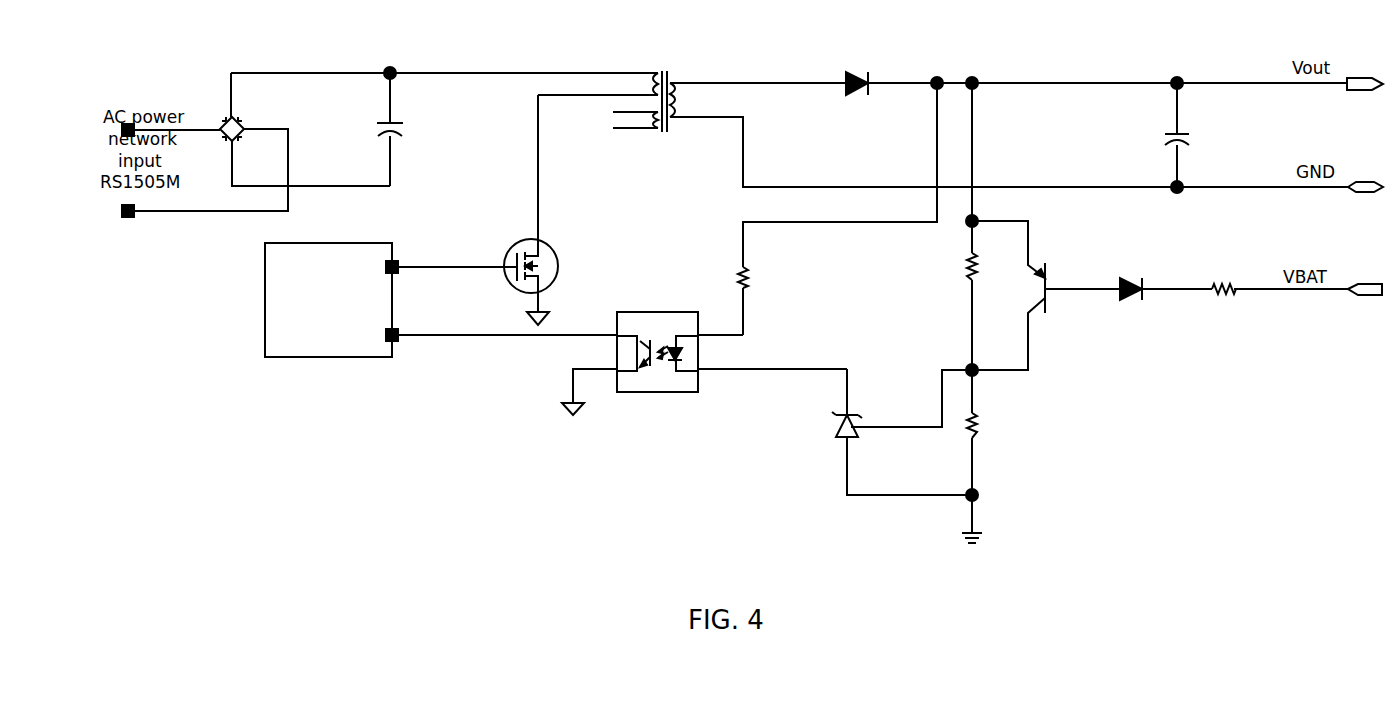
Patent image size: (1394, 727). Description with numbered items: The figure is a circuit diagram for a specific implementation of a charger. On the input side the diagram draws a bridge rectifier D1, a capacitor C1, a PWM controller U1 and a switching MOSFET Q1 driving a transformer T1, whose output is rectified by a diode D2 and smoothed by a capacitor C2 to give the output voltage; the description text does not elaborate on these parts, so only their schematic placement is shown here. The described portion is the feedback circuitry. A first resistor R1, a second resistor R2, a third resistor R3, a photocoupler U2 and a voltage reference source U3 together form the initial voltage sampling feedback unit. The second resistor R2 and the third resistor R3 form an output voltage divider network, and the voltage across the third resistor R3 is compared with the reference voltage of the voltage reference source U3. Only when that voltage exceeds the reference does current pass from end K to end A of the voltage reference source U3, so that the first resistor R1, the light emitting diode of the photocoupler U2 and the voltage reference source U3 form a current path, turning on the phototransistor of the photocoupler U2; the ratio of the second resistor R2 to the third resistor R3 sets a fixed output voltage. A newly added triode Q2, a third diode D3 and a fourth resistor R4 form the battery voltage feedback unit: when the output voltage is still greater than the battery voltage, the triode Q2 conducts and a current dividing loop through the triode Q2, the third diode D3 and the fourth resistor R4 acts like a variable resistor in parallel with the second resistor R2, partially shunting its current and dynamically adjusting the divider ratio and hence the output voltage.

The bridge rectifier D1 is at (267, 120).
The filter capacitor C1 is at (404, 129).
The PWM controller U1 is at (441, 287).
The switching MOSFET Q1 is at (529, 210).
The transformer T1 is at (944, 102).
The photocoupler U2 is at (704, 352).
The first resistor R1 is at (837, 209).
The output rectifier diode D2 is at (1079, 78).
The output capacitor C2 is at (1194, 135).
The second resistor R2 is at (958, 226).
The triode Q2 is at (1043, 298).
The third diode D3 is at (1154, 277).
The fourth resistor R4 is at (1278, 293).
The voltage reference source U3 is at (882, 432).
The third resistor R3 is at (989, 456).